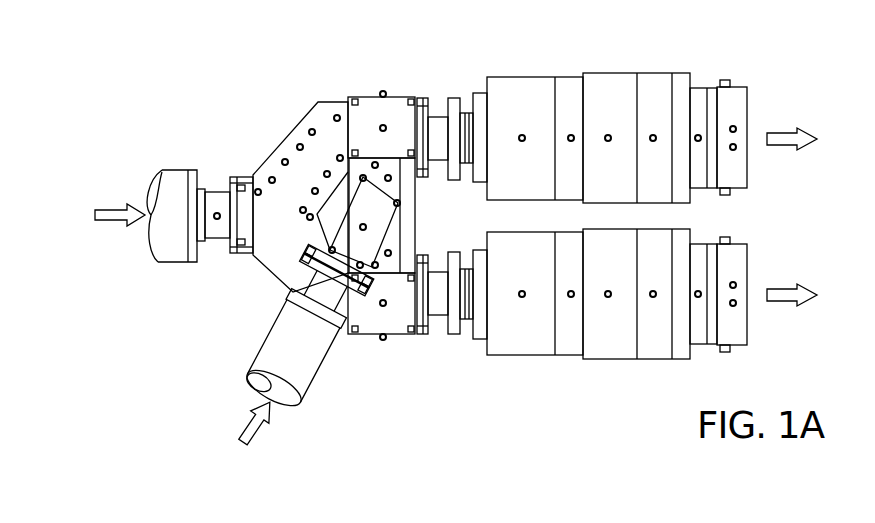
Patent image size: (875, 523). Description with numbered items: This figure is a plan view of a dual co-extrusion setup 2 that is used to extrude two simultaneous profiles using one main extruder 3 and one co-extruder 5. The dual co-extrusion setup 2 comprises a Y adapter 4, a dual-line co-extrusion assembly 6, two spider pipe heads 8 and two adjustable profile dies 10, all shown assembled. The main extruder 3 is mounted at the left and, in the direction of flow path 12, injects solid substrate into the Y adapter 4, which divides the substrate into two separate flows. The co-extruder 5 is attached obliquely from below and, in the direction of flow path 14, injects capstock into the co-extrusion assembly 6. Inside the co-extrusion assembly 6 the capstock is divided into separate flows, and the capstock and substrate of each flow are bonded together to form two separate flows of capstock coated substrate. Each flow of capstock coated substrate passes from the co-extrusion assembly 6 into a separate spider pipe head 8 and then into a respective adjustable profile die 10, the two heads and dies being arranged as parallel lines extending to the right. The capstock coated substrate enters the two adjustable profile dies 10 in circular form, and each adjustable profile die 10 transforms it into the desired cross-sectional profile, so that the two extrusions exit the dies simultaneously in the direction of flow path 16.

The dual co-extrusion setup 2 is at (413, 72).
The main extruder 3 is at (177, 263).
The Y adapter 4 is at (297, 168).
The co-extruder 5 is at (314, 378).
The dual-line co-extrusion assembly 6 is at (392, 327).
The spider pipe head 8 is at (608, 78).
The adjustable profile die 10 is at (740, 165).
The flow path 12 is at (113, 222).
The flow path 14 is at (253, 435).
The flow path 16 is at (773, 132).